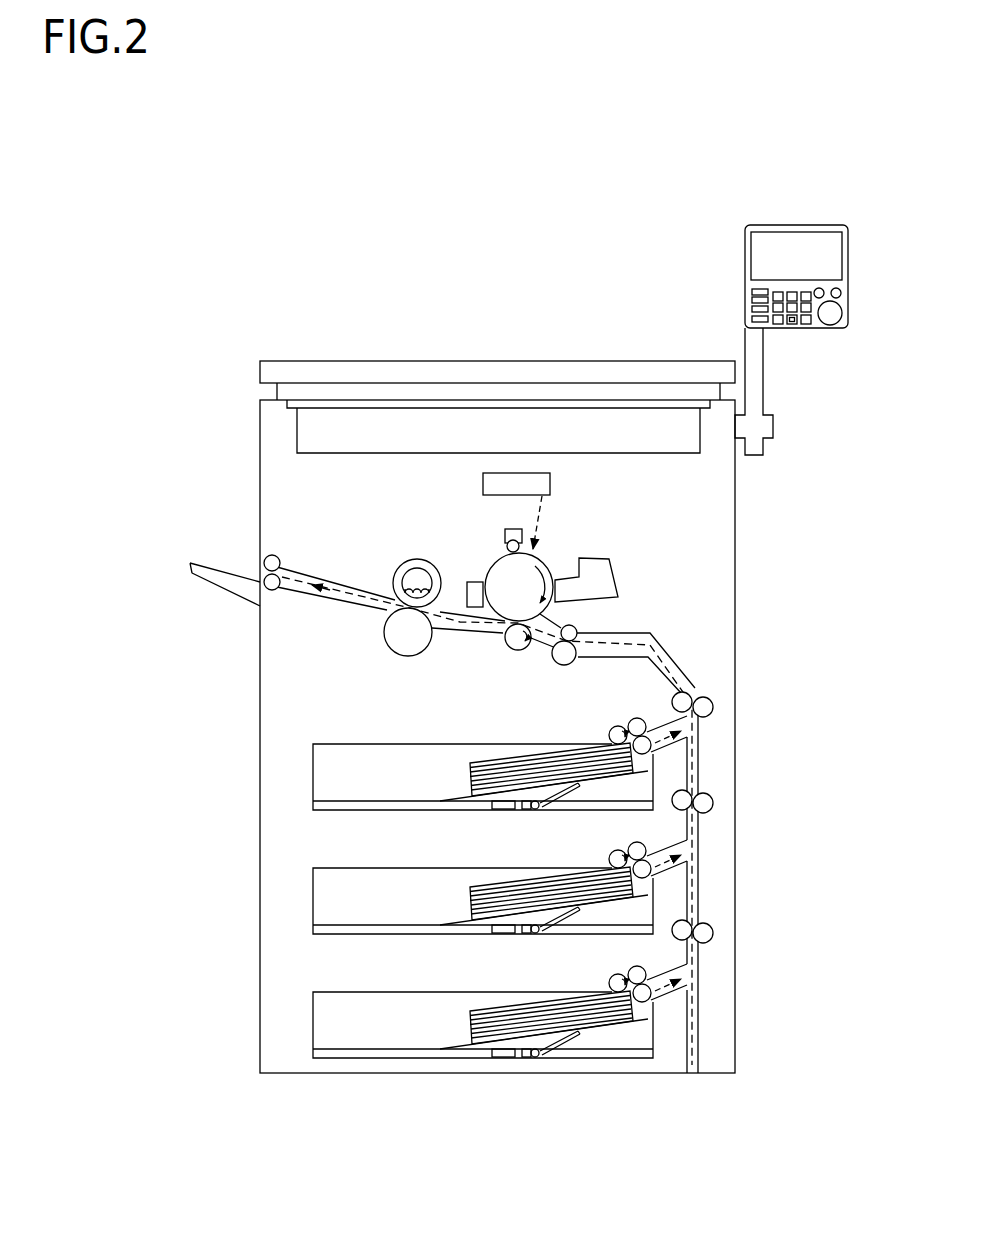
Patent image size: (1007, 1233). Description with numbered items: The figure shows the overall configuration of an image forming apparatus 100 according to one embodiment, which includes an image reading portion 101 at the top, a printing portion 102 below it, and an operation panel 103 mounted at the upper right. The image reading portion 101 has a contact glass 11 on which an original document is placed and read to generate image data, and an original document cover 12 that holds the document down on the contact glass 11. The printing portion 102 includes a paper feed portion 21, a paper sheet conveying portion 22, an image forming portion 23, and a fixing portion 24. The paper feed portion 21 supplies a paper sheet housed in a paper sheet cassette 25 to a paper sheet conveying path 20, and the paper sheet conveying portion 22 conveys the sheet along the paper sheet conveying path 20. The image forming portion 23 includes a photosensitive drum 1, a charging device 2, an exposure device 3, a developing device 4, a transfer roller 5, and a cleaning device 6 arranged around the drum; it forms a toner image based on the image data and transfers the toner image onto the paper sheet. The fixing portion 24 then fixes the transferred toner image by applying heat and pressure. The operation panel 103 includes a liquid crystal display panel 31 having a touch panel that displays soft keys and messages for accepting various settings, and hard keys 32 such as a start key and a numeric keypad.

The image forming apparatus 100 is at (502, 684).
The image reading portion 101 is at (705, 449).
The printing portion 102 is at (704, 588).
The operation panel 103 is at (780, 314).
The liquid crystal display panel 31 is at (788, 239).
The hard keys 32 is at (793, 322).
The contact glass 11 is at (493, 410).
The original document cover 12 is at (420, 372).
The photosensitive drum 1 is at (500, 567).
The charging device 2 is at (508, 530).
The exposure device 3 is at (485, 483).
The developing device 4 is at (608, 572).
The transfer roller 5 is at (511, 645).
The cleaning device 6 is at (468, 582).
The image forming portion 23 is at (542, 565).
The fixing portion 24 is at (382, 626).
The paper sheet conveying path 20 is at (676, 662).
The paper feed portion 21 is at (605, 735).
The paper sheet conveying portion 22 is at (281, 549).
The paper sheet cassette 25 is at (341, 743).